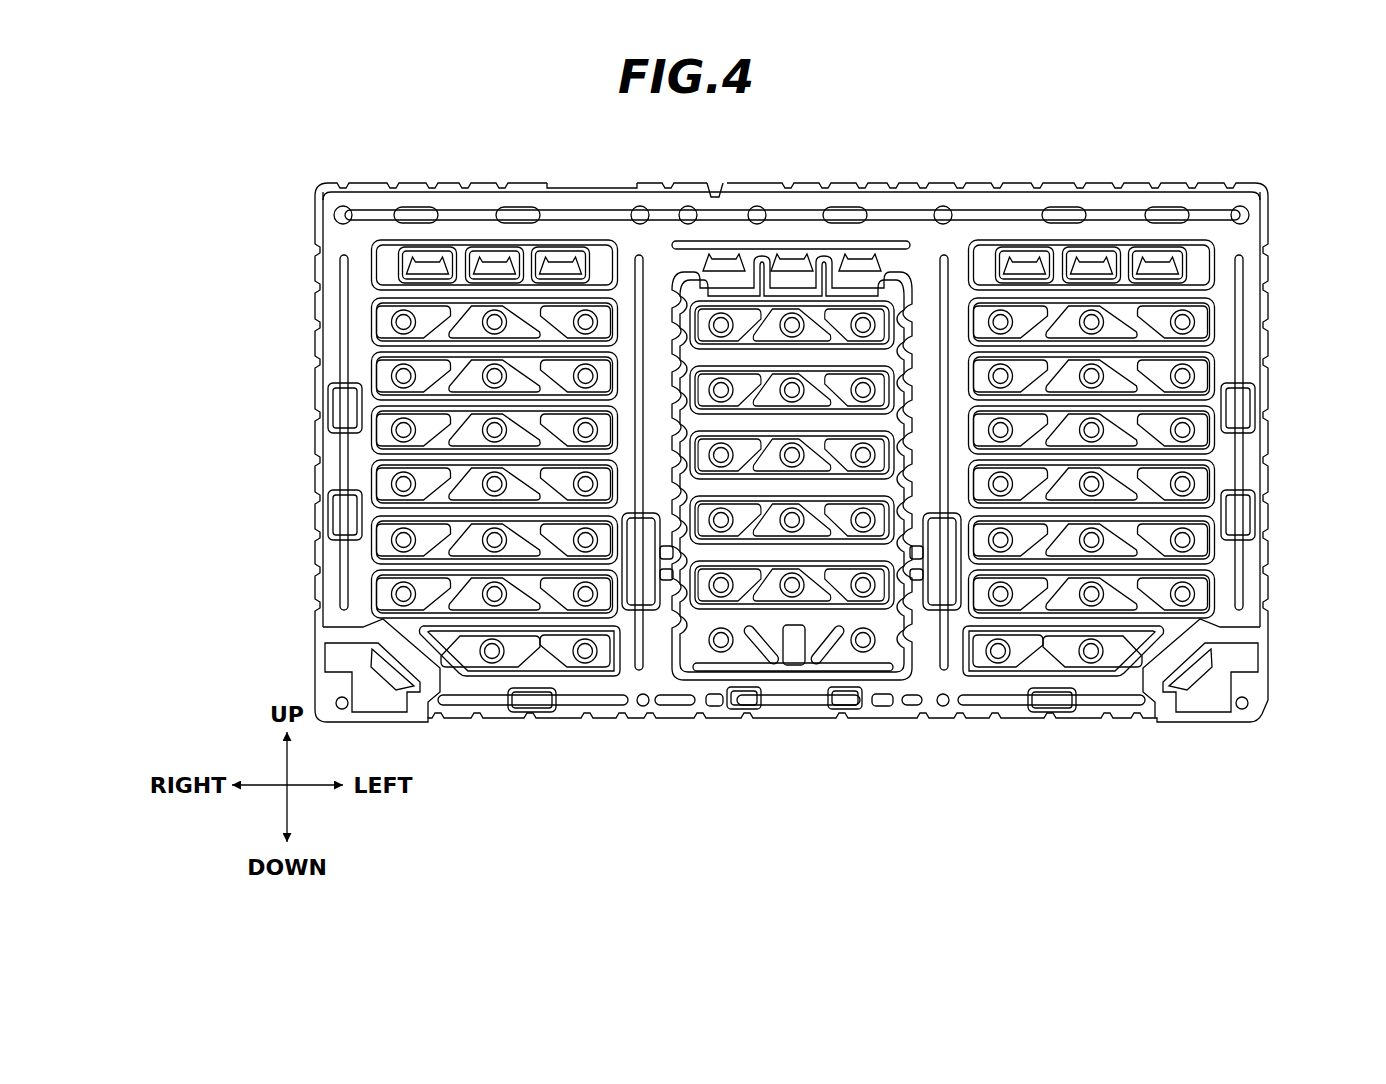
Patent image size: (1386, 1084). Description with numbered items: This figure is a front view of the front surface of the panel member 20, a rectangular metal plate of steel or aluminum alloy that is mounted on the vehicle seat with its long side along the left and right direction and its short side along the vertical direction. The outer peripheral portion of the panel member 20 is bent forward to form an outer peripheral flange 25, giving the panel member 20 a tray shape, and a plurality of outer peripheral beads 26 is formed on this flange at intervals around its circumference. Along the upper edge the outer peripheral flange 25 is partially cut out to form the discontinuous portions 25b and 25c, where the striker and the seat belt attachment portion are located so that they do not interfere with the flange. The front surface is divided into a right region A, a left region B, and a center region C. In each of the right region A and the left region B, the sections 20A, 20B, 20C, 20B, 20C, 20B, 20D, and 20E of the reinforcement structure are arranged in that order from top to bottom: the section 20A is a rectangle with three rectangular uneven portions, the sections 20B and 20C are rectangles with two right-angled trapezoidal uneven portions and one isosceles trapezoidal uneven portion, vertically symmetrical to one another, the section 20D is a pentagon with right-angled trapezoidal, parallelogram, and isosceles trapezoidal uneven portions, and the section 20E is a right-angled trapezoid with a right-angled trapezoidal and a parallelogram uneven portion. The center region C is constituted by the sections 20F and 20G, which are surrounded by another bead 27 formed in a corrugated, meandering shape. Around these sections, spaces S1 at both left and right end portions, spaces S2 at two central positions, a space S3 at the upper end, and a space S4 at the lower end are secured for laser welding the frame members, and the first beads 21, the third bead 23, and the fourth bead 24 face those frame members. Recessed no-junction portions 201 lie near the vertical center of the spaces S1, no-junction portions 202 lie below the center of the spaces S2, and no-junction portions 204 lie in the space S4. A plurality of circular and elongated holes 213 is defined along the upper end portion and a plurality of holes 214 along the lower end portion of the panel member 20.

The panel member 20 is at (834, 128).
The section of the reinforcement structure 20A is at (372, 258).
The section of the reinforcement structure 20B is at (372, 320).
The section of the reinforcement structure 20C is at (372, 375).
The section of the reinforcement structure 20D is at (372, 590).
The section of the reinforcement structure 20E is at (583, 677).
The section of the reinforcement structure 20F is at (893, 318).
The section of the reinforcement structure 20G is at (888, 393).
The first bead 21 is at (328, 286).
The third bead 23 is at (557, 210).
The fourth bead 24 is at (573, 702).
The outer peripheral flange 25 is at (980, 181).
The discontinuous portion 25b is at (568, 187).
The discontinuous portion 25c is at (716, 189).
The outer peripheral bead 26 is at (431, 182).
The other bead 27 is at (672, 277).
The no-junction portion 201 is at (333, 408).
The no-junction portion 202 is at (648, 523).
The no-junction portion 204 is at (523, 707).
The hole 213 is at (340, 206).
The hole 214 is at (345, 708).
The space S1 is at (339, 613).
The space S2 is at (636, 260).
The space S3 is at (736, 204).
The space S4 is at (795, 708).
The right region A is at (461, 135).
The left region B is at (1159, 150).
The center region C is at (827, 111).